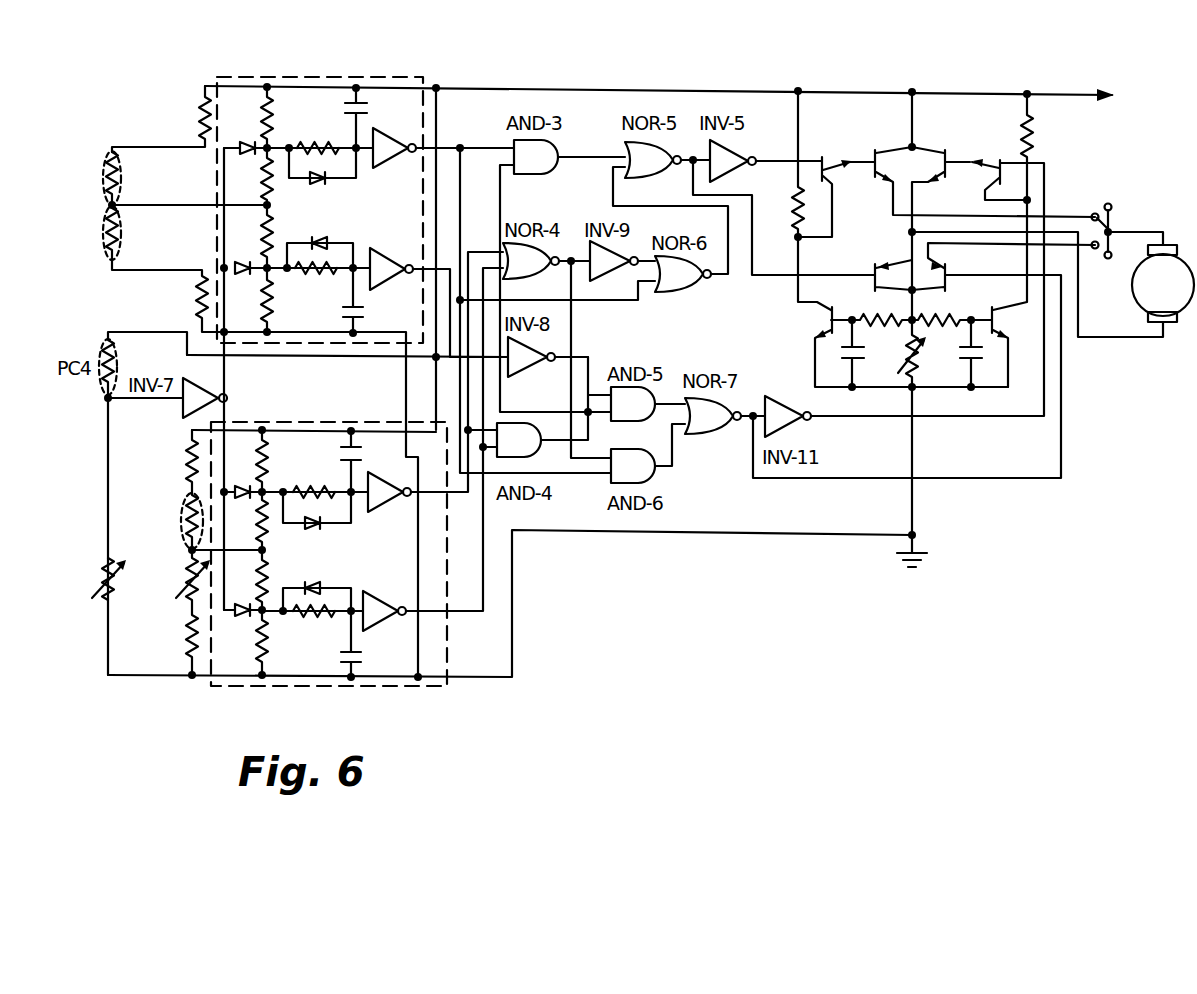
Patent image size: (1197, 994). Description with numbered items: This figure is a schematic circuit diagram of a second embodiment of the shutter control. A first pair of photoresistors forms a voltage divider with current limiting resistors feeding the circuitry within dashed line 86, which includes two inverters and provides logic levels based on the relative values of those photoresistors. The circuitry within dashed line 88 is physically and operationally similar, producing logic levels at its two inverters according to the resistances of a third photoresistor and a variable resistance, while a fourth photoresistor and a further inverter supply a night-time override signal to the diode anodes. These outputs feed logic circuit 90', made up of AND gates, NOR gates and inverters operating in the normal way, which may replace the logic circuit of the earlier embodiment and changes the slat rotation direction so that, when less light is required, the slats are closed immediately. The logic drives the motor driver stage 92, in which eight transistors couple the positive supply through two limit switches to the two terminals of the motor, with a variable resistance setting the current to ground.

The dashed line circuitry 86 is at (346, 77).
The dashed line circuitry 88 is at (447, 686).
The logic circuit 90' is at (659, 68).
The motor driver circuit 92 is at (969, 492).